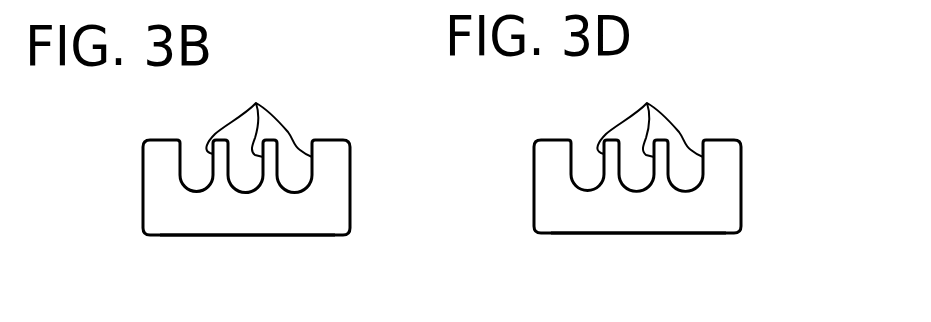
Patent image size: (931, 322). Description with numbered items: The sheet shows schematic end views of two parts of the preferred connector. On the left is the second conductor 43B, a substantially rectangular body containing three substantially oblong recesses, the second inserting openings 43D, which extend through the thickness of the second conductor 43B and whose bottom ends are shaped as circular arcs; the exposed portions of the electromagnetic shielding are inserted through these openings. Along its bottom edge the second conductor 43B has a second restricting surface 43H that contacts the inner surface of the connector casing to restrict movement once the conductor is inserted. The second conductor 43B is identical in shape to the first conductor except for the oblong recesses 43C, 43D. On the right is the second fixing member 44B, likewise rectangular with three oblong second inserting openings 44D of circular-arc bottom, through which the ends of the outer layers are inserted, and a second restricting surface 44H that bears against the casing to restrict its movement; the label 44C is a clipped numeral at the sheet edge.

In FIG. 3B, the second conductor 43B is at (350, 188).
In FIG. 3B, the second inserting openings 43D is at (259, 111).
In FIG. 3B, the second restricting surface 43H is at (248, 235).
In FIG. 3B, the oblong recesses 43C is at (258, 7).
In FIG. 3D, the second fixing member 44B is at (742, 186).
In FIG. 3D, the second inserting openings 44D is at (650, 111).
In FIG. 3D, the second restricting surface 44H is at (637, 233).
In FIG. 3D, the clip (label clipped) 44C is at (655, 7).